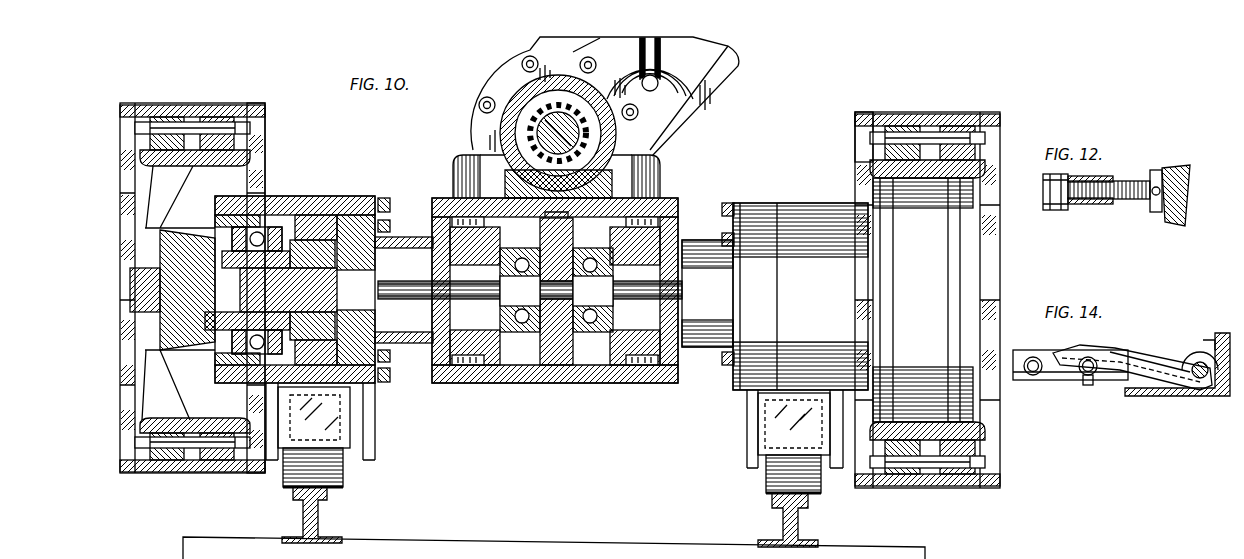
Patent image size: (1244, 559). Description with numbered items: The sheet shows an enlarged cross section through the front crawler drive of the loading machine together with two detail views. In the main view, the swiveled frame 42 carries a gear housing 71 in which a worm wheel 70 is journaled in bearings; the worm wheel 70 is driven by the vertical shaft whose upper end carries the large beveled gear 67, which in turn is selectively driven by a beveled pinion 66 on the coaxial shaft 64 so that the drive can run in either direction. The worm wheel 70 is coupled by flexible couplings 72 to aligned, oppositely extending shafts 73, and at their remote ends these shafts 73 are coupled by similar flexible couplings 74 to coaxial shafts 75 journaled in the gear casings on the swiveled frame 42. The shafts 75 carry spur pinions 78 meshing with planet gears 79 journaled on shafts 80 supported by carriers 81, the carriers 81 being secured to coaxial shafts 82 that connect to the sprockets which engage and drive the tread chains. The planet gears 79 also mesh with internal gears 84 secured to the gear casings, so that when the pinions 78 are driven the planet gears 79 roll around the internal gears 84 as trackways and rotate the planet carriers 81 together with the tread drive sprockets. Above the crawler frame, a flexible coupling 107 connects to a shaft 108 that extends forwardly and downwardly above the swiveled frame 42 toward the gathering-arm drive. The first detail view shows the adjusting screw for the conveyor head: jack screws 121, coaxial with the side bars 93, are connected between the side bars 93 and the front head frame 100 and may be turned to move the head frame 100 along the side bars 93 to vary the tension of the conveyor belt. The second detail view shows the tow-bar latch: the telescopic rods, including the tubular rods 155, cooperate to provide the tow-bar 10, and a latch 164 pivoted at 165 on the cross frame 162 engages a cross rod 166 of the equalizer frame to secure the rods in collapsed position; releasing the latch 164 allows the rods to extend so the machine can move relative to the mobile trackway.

In FIG. 10, the coaxial shafts 82 is at (150, 279).
In FIG. 10, the internal gears 84 is at (257, 210).
In FIG. 10, the coaxial shafts 75 is at (310, 212).
In FIG. 10, the planet gears 79 is at (253, 227).
In FIG. 10, the shafts 80 is at (237, 236).
In FIG. 10, the spur pinions 78 is at (205, 336).
In FIG. 10, the carriers 81 is at (227, 357).
In FIG. 10, the flexible couplings 74 is at (387, 240).
In FIG. 10, the aligned, oppositely extending shafts 73 is at (427, 301).
In FIG. 10, the swiveled frame 42 is at (665, 222).
In FIG. 10, the gear housing 71 is at (610, 382).
In FIG. 10, the worm wheel 70 is at (552, 367).
In FIG. 10, the flexible couplings 72 is at (533, 320).
In FIG. 10, the beveled gear 67 is at (600, 150).
In FIG. 10, the beveled pinion 66 is at (527, 130).
In FIG. 10, the coaxial shaft 64 is at (553, 128).
In FIG. 10, the flexible coupling 107 is at (680, 72).
In FIG. 10, the shaft 108 is at (657, 58).
In FIG. 12, the side bars 93 is at (1055, 202).
In FIG. 12, the jack screws 121 is at (1133, 200).
In FIG. 12, the front head frame 100 is at (1174, 170).
In FIG. 14, the tow-bar 10 is at (1050, 382).
In FIG. 14, the tubular members or rods 155 is at (1033, 354).
In FIG. 14, the cross rod 166 is at (1088, 382).
In FIG. 14, the latch 164 is at (1103, 350).
In FIG. 14, the pivot 165 is at (1197, 363).
In FIG. 14, the cross frame 162 is at (1172, 398).